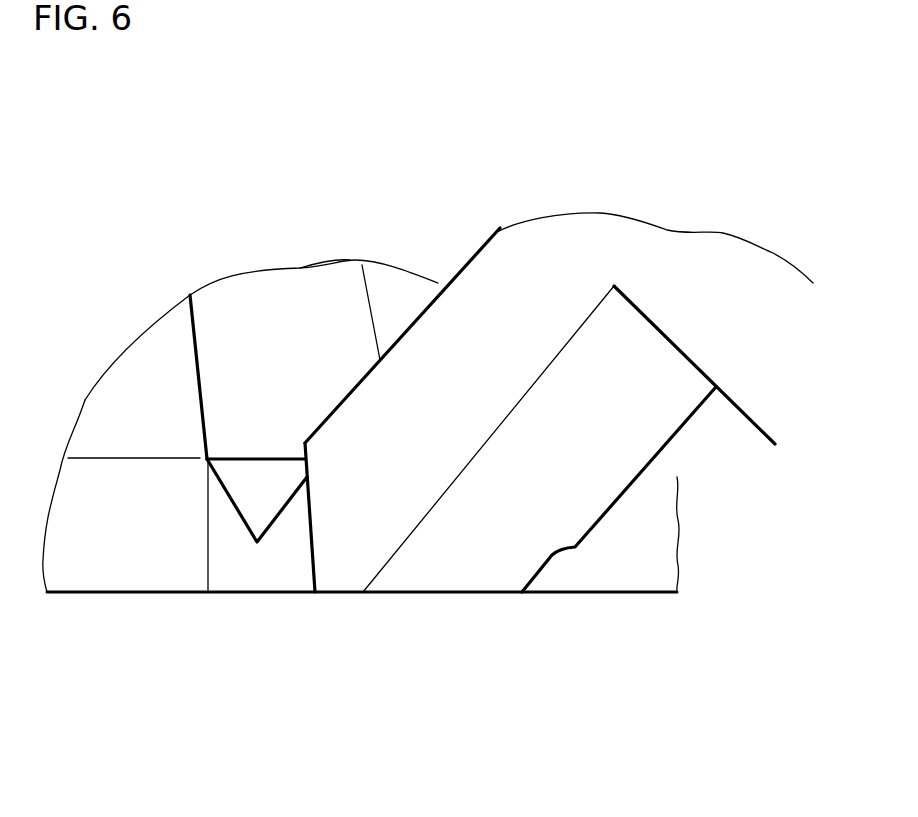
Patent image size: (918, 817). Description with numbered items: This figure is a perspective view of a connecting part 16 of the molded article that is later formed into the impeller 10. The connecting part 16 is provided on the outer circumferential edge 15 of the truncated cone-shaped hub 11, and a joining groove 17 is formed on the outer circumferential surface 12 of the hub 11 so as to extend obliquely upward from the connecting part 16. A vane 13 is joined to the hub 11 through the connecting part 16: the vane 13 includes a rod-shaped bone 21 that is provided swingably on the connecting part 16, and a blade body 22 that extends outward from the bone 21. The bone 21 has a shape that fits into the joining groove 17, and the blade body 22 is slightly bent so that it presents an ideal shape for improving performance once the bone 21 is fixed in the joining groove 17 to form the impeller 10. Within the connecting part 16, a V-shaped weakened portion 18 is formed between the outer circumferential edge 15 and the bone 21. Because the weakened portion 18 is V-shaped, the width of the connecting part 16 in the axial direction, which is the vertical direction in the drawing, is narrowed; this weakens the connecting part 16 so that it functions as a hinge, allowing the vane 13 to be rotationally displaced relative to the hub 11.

The impeller 10 is at (202, 160).
The hub 11 is at (153, 360).
The outer circumferential surface 12 is at (118, 400).
The vane 13 is at (775, 660).
The outer circumferential edge 15 is at (147, 593).
The connecting part 16 is at (300, 594).
The joining groove 17 is at (318, 312).
The weakened portion 18 is at (262, 525).
The bone 21 is at (595, 527).
The blade body 22 is at (748, 422).